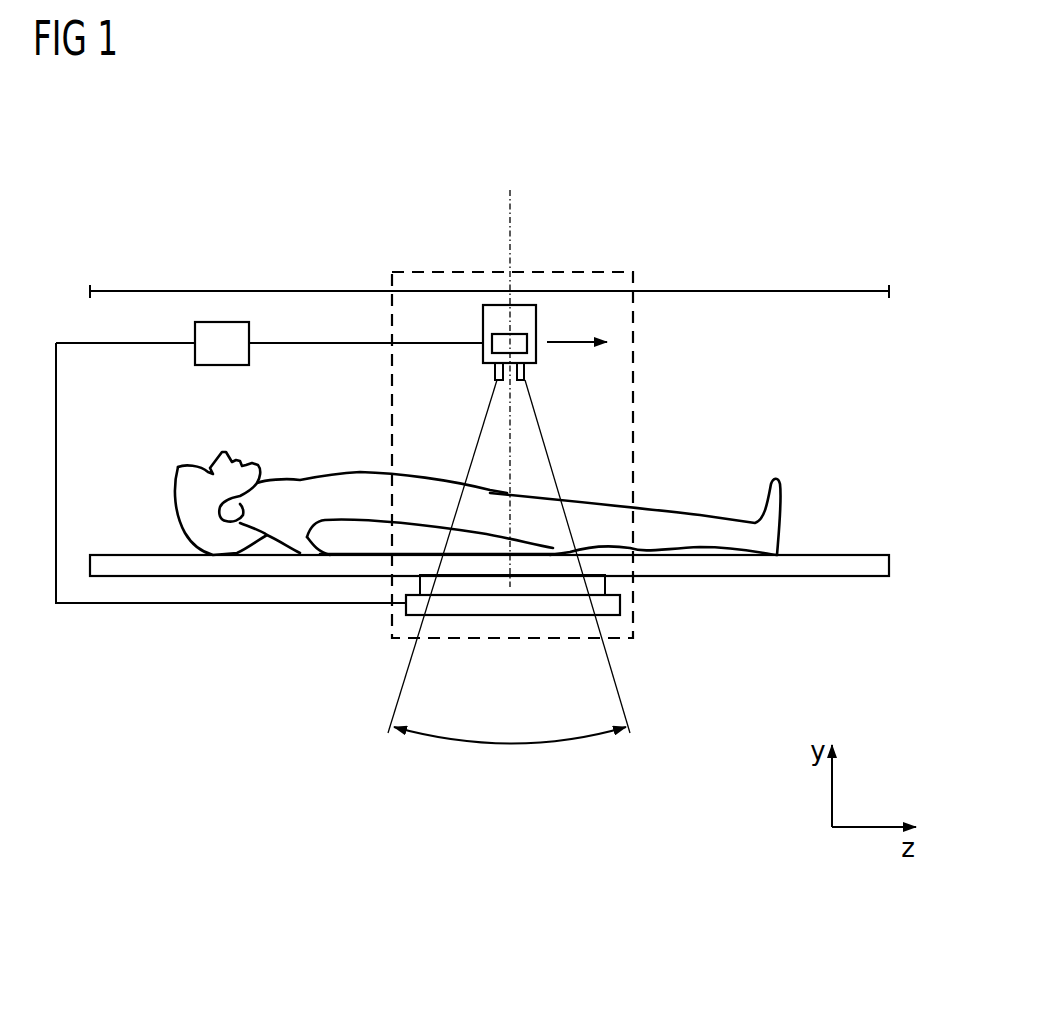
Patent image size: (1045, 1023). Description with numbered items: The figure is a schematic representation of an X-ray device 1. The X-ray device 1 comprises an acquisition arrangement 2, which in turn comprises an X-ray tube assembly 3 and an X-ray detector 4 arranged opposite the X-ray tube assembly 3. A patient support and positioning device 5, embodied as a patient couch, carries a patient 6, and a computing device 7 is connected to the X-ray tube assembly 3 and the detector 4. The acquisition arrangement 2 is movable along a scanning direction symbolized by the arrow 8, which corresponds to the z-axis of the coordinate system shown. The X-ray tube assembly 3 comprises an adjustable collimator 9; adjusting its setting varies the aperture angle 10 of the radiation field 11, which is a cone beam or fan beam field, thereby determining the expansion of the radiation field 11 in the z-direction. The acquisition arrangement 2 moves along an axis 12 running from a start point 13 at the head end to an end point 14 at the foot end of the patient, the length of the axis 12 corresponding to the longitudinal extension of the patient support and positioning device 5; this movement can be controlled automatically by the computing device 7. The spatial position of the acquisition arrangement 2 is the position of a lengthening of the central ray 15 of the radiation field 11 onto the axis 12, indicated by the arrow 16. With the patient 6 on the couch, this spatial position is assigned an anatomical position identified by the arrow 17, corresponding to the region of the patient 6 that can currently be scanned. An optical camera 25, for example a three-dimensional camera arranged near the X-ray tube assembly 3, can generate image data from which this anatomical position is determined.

The X-ray device 1 is at (779, 198).
The acquisition arrangement 2 is at (420, 271).
The X-ray tube assembly 3 is at (525, 314).
The X-ray detector 4 is at (467, 606).
The patient support and positioning device 5 is at (168, 569).
The patient 6 is at (300, 553).
The computing device 7 is at (229, 321).
The arrow 8 is at (572, 341).
The collimator 9 is at (526, 375).
The aperture angle 10 is at (515, 745).
The radiation field 11 is at (527, 457).
The axis 12 is at (303, 290).
The start point 13 is at (90, 291).
The end point 14 is at (889, 291).
The central ray 15 is at (512, 419).
The arrow 16 is at (513, 286).
The arrow 17 is at (514, 519).
The optical camera 25 is at (503, 340).